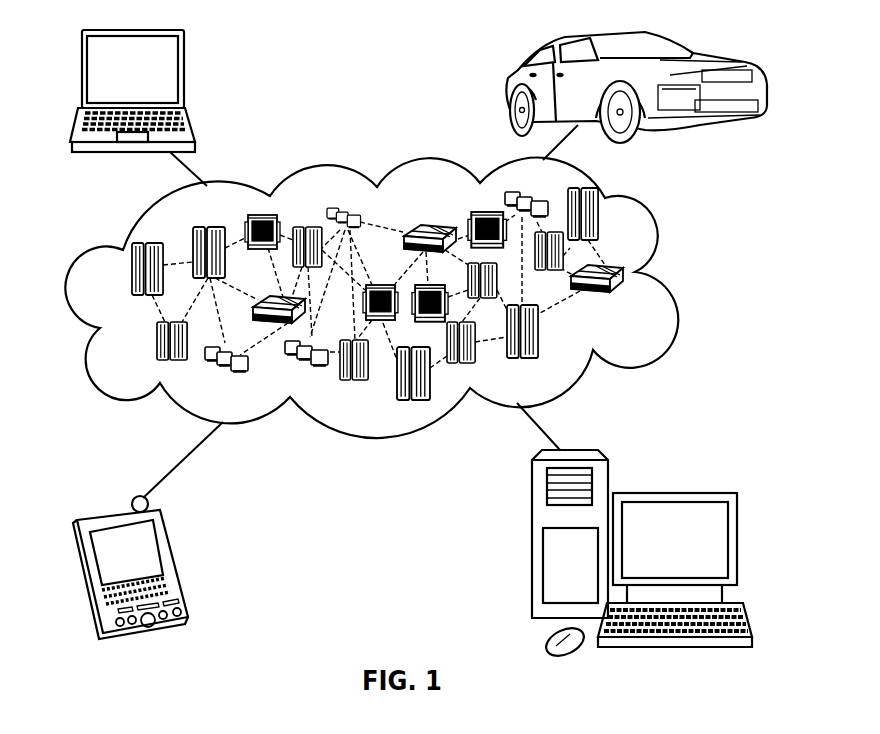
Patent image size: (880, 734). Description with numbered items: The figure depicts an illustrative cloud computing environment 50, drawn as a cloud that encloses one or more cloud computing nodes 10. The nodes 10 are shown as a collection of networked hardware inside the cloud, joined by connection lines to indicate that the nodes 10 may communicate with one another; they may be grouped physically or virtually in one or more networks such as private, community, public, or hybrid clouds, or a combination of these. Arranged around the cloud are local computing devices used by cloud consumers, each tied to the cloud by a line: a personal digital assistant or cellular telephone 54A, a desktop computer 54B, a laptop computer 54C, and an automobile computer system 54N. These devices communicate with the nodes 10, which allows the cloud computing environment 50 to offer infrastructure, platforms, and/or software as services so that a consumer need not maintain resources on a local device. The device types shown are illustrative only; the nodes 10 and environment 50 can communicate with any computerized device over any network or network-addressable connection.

The cloud computing nodes 10 is at (418, 294).
The cloud computing environment 50 is at (676, 290).
The personal digital assistant (PDA) or cellular telephone 54A is at (177, 560).
The desktop computer 54B is at (670, 490).
The laptop computer 54C is at (185, 75).
The automobile computer system 54N is at (508, 88).